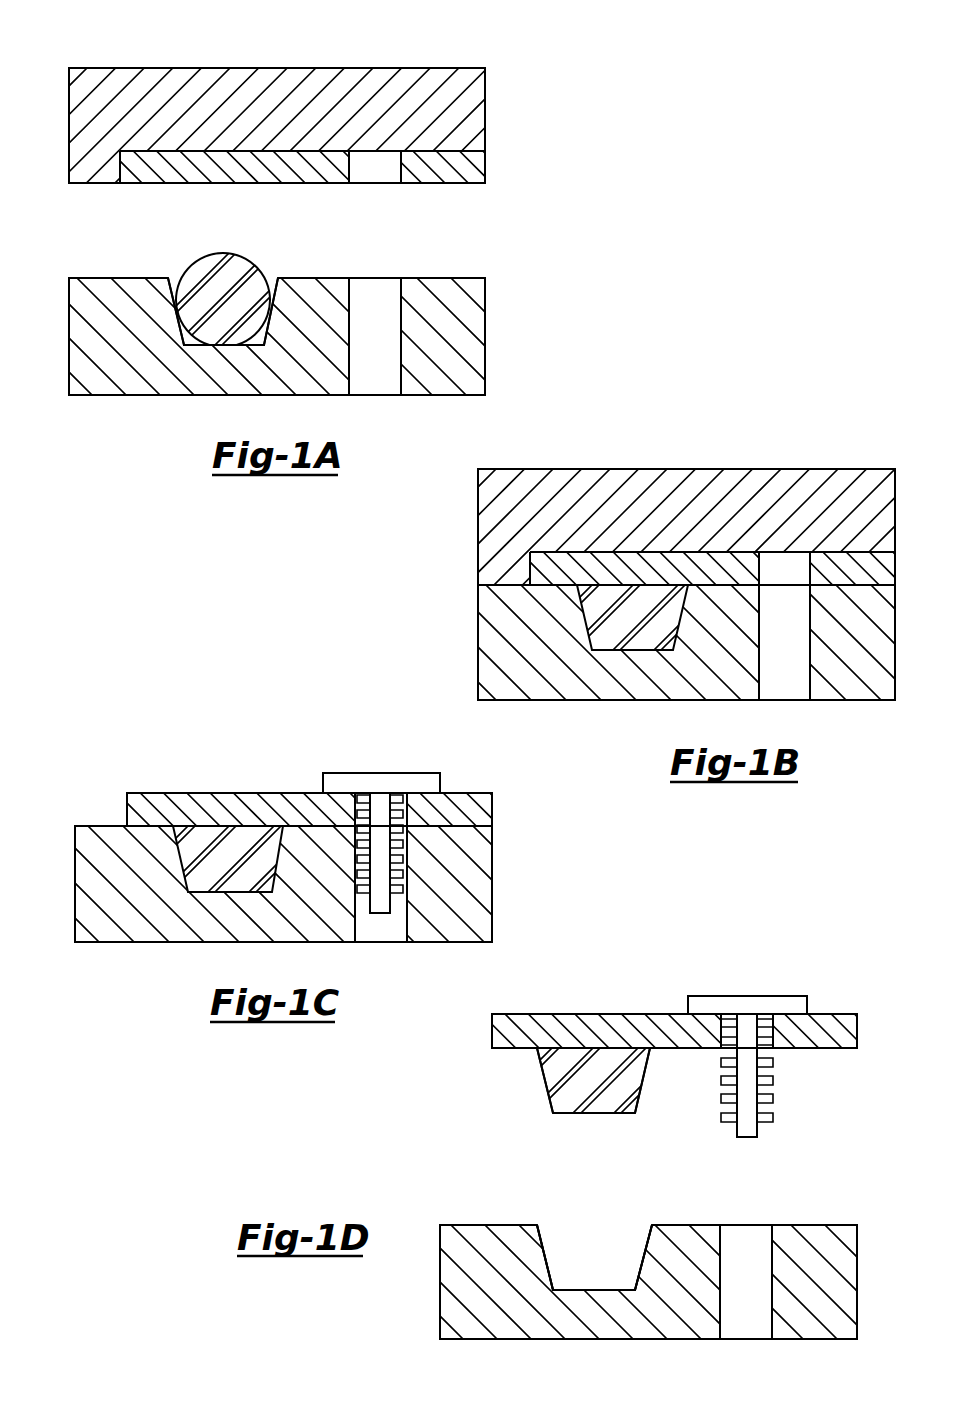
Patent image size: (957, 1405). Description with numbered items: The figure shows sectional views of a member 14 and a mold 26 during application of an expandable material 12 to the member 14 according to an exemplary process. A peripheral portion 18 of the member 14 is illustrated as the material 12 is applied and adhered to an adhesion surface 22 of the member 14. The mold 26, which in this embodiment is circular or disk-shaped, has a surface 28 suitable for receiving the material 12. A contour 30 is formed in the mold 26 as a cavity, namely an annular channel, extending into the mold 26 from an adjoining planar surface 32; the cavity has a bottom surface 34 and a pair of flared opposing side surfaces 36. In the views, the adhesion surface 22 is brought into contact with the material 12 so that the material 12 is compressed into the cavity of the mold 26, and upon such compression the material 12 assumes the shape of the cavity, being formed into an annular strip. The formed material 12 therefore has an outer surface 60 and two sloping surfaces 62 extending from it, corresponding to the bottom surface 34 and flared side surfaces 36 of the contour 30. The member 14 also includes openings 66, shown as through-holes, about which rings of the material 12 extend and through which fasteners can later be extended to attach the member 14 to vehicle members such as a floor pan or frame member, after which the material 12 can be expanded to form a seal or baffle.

In FIG. 1A, the material 12 is at (213, 333).
In FIG. 1B, the material 12 is at (647, 638).
In FIG. 1C, the material 12 is at (243, 878).
In FIG. 1D, the material 12 is at (570, 1100).
In FIG. 1A, the member 14 is at (182, 162).
In FIG. 1B, the member 14 is at (587, 562).
In FIG. 1C, the member 14 is at (183, 805).
In FIG. 1D, the member 14 is at (548, 1025).
In FIG. 1A, the peripheral portion 18 is at (132, 187).
In FIG. 1B, the peripheral portion 18 is at (540, 578).
In FIG. 1C, the peripheral portion 18 is at (138, 820).
In FIG. 1D, the peripheral portion 18 is at (502, 1040).
In FIG. 1A, the adhesion surface 22 is at (295, 192).
In FIG. 1A, the mold 26 is at (100, 388).
In FIG. 1B, the mold 26 is at (510, 690).
In FIG. 1C, the mold 26 is at (107, 932).
In FIG. 1D, the mold 26 is at (470, 1330).
In FIG. 1A, the surface 28 is at (336, 270).
In FIG. 1D, the surface 28 is at (699, 1218).
In FIG. 1A, the contour 30 is at (178, 270).
In FIG. 1D, the contour 30 is at (560, 1222).
In FIG. 1A, the adjoining planar surface 32 is at (107, 270).
In FIG. 1D, the adjoining planar surface 32 is at (472, 1218).
In FIG. 1D, the bottom surface 34 is at (574, 1290).
In FIG. 1D, the flared opposing side surfaces 36 is at (642, 1256).
In FIG. 1D, the outer surface 60 is at (594, 1113).
In FIG. 1D, the sloping surfaces 62 is at (543, 1082).
In FIG. 1A, the openings 66 is at (386, 170).
In FIG. 1B, the openings 66 is at (795, 572).